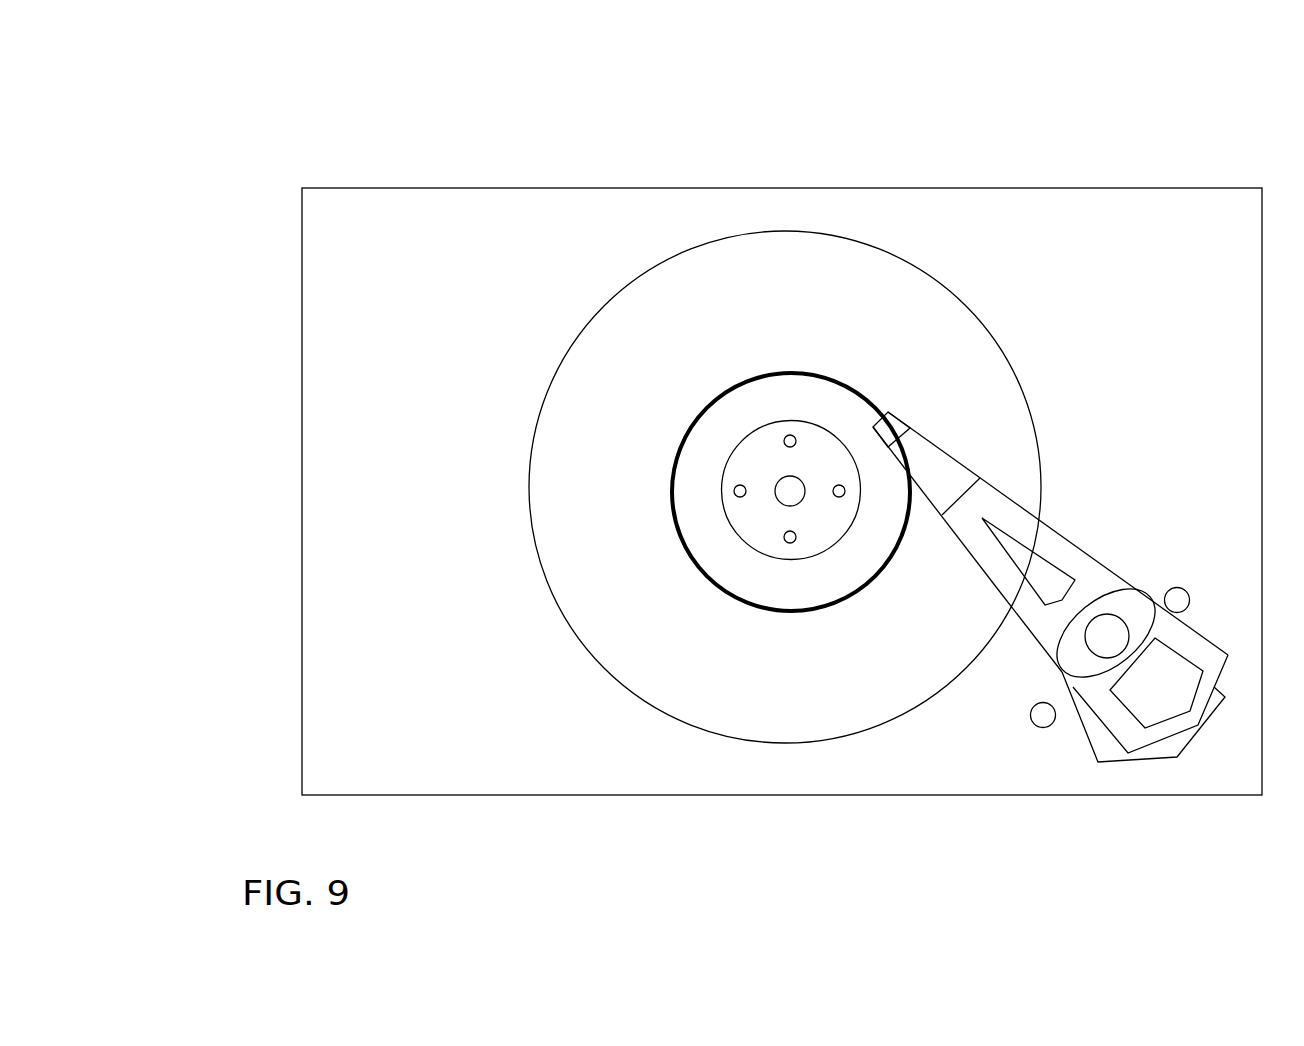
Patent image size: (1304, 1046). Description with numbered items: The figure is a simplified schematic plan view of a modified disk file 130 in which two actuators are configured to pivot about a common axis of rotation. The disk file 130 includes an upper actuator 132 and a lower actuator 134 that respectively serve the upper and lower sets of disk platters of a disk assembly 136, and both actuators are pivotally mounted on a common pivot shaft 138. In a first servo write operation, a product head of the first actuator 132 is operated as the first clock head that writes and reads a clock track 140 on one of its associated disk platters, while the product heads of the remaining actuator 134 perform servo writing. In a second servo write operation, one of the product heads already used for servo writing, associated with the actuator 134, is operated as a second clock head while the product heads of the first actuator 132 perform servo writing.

The disk file 130 is at (320, 153).
The upper actuator 132 is at (1060, 525).
The lower actuator 134 is at (1053, 482).
The disk assembly 136 is at (885, 754).
The common pivot shaft 138 is at (1107, 635).
The clock track 140 is at (782, 612).